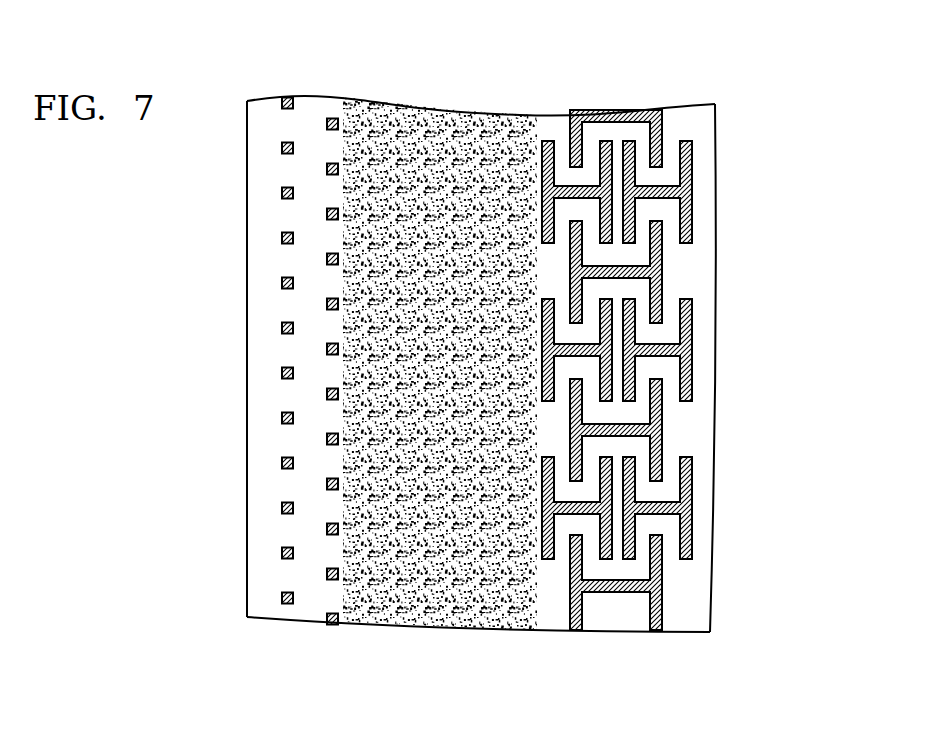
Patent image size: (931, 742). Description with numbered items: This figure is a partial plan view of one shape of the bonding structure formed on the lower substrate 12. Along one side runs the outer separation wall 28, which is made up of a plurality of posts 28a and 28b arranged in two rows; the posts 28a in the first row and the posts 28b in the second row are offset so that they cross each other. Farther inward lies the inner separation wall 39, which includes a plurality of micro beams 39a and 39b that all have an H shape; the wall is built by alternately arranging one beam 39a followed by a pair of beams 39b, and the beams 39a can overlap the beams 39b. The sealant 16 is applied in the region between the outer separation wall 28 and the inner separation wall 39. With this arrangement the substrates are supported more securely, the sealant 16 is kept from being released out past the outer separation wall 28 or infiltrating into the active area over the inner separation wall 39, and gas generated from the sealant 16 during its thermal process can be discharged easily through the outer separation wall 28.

The lower substrate 12 is at (696, 105).
The sealant 16 is at (427, 607).
The outer separation wall 28 is at (228, 361).
The posts 28a is at (282, 551).
The posts 28b is at (327, 618).
The inner separation wall 39 is at (685, 370).
The beam 39a is at (658, 452).
The beams 39b is at (607, 333).